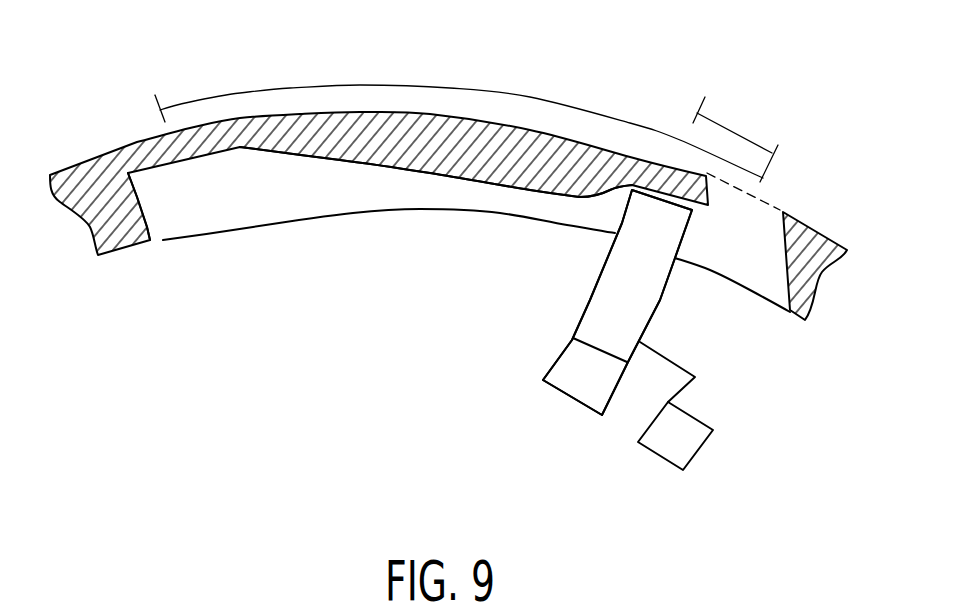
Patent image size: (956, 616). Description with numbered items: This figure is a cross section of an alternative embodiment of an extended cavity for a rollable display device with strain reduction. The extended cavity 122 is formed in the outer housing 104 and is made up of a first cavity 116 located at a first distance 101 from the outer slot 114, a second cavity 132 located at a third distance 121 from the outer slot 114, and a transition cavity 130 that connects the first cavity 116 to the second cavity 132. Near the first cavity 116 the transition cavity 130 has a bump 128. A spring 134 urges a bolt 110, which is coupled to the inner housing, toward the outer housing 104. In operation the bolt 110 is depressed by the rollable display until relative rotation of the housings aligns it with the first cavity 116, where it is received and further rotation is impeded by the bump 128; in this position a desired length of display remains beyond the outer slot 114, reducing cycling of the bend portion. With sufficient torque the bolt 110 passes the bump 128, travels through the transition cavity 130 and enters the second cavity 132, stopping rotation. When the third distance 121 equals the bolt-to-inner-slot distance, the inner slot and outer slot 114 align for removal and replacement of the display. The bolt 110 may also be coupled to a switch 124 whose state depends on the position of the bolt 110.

The first distance 101 is at (733, 123).
The outer housing 104 is at (368, 118).
The bolt 110 is at (638, 293).
The outer slot 114 is at (752, 223).
The first cavity 116 is at (608, 222).
The third distance 121 is at (231, 95).
The extended cavity 122 is at (242, 239).
The switch 124 is at (688, 443).
The bump 128 is at (588, 198).
The transition cavity 130 is at (372, 193).
The second cavity 132 is at (162, 220).
The spring 134 is at (583, 392).